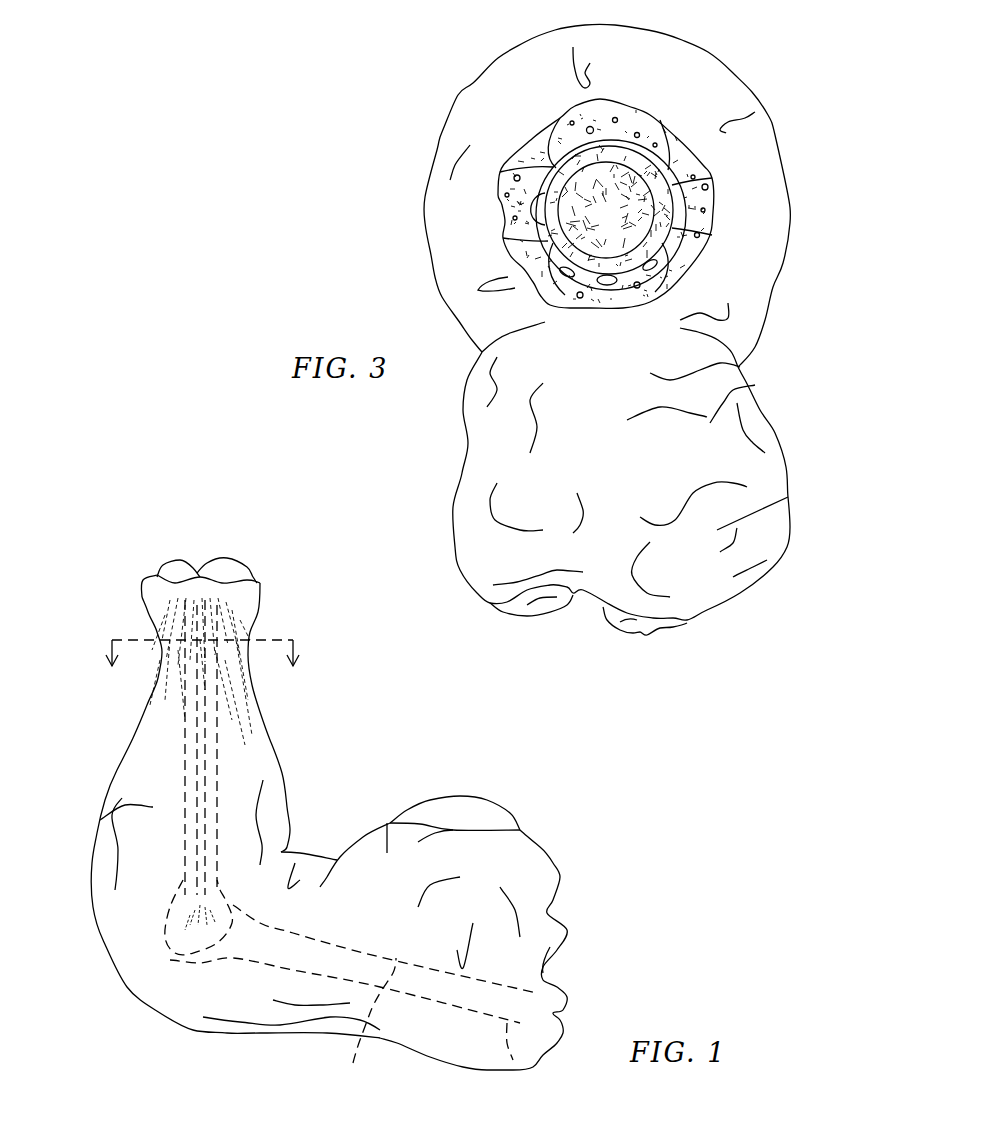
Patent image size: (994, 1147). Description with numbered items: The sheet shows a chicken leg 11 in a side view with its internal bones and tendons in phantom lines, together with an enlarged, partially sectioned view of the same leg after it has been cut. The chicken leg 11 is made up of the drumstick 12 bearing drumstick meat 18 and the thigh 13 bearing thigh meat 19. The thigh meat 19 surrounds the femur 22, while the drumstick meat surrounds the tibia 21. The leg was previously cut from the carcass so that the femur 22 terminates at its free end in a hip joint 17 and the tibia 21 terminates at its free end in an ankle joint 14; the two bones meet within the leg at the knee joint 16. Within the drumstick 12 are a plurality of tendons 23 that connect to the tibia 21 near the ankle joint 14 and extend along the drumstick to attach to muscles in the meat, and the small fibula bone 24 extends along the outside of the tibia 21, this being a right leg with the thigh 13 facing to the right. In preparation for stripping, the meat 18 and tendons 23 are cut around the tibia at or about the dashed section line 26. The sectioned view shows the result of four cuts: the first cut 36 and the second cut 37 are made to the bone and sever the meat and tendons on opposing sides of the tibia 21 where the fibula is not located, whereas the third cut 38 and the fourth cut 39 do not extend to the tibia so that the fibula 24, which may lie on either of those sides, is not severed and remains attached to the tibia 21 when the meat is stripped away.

In FIG. 1, the chicken leg 11 is at (662, 826).
In FIG. 3, the drumstick 12 is at (473, 85).
In FIG. 1, the drumstick 12 is at (280, 748).
In FIG. 3, the thigh 13 is at (639, 478).
In FIG. 1, the thigh 13 is at (475, 919).
In FIG. 1, the ankle joint 14 is at (227, 563).
In FIG. 1, the knee joint 16 is at (168, 958).
In FIG. 1, the hip joint 17 is at (560, 977).
In FIG. 1, the drumstick meat 18 is at (100, 820).
In FIG. 3, the thigh meat 19 is at (710, 423).
In FIG. 1, the thigh meat 19 is at (387, 825).
In FIG. 3, the tibia 21 is at (655, 243).
In FIG. 1, the tibia 21 is at (217, 803).
In FIG. 1, the femur 22 is at (360, 1060).
In FIG. 3, the tendons 23 is at (592, 128).
In FIG. 1, the tendons 23 is at (222, 673).
In FIG. 3, the fibula bone 24 is at (527, 207).
In FIG. 1, the fibula bone 24 is at (197, 758).
In FIG. 1, the dashed section line 26 is at (277, 633).
In FIG. 3, the first cut 36 is at (553, 157).
In FIG. 3, the second cut 37 is at (542, 300).
In FIG. 3, the third cut 38 is at (520, 237).
In FIG. 3, the fourth cut 39 is at (693, 223).